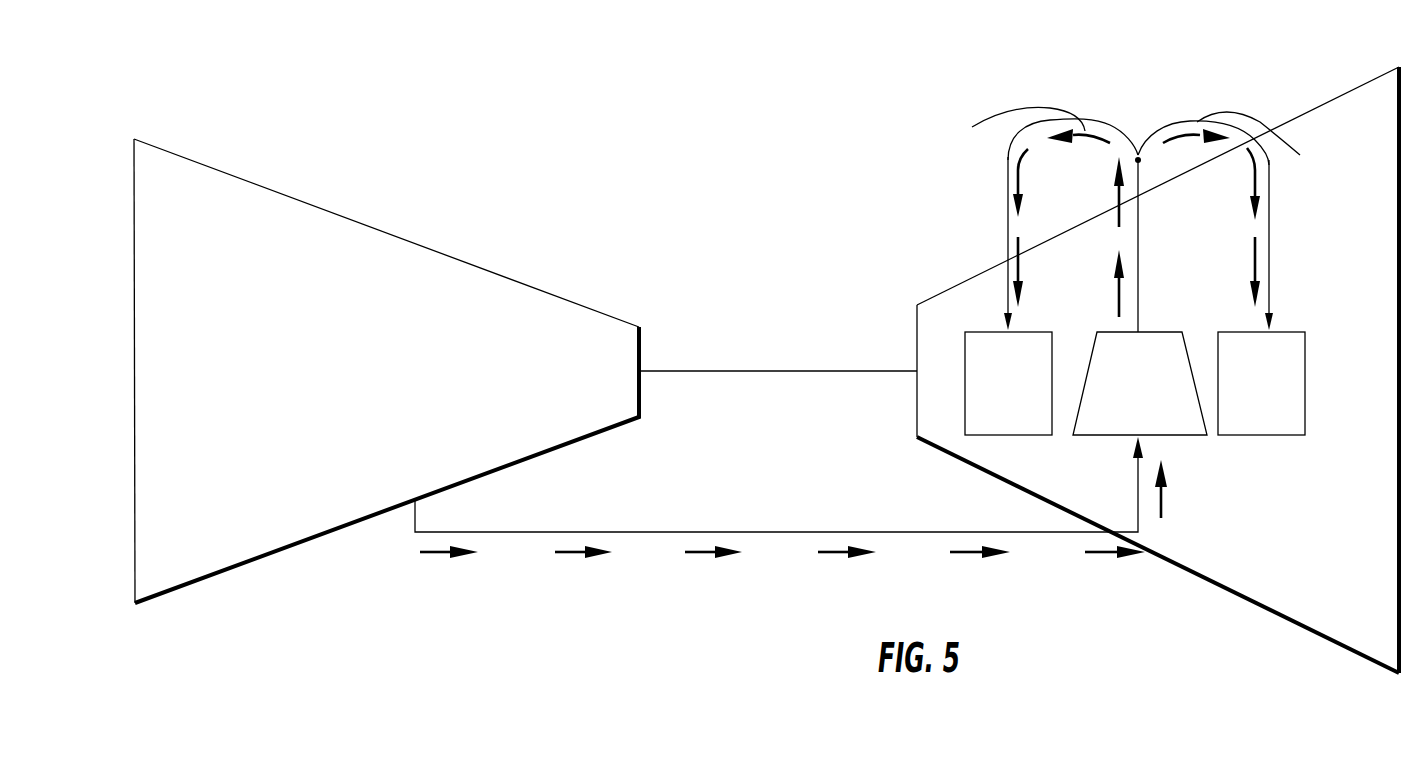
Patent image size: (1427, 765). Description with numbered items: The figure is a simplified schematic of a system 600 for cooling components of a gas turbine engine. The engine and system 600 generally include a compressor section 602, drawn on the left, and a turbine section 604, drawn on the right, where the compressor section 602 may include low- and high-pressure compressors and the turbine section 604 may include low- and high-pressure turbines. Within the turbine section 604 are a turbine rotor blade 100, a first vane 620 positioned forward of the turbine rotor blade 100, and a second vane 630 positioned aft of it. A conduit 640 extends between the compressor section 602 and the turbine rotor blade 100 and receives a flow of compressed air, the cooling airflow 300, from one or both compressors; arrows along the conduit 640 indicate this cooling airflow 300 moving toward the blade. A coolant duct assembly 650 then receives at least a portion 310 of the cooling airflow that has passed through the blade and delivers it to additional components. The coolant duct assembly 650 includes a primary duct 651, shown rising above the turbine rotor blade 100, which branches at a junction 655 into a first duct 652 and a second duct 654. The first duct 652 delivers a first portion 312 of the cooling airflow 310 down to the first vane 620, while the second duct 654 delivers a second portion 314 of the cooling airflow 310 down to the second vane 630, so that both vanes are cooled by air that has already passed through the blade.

The turbine rotor blade 100 is at (1120, 395).
The cooling airflow 300 is at (445, 556).
The portion of the cooling airflow 310 is at (1120, 300).
The first portion of the cooling airflow 312 is at (1008, 245).
The second portion of the cooling airflow 314 is at (1269, 247).
The system 600 is at (1132, 625).
The compressor section 602 is at (408, 382).
The turbine section 604 is at (1242, 548).
The first vane 620 is at (988, 395).
The second vane 630 is at (1240, 395).
The conduit 640 is at (710, 532).
The coolant duct assembly 650 is at (1237, 72).
The primary duct 651 is at (1140, 268).
The first duct 652 is at (1008, 293).
The second duct 654 is at (1270, 295).
The junction 655 is at (1138, 157).